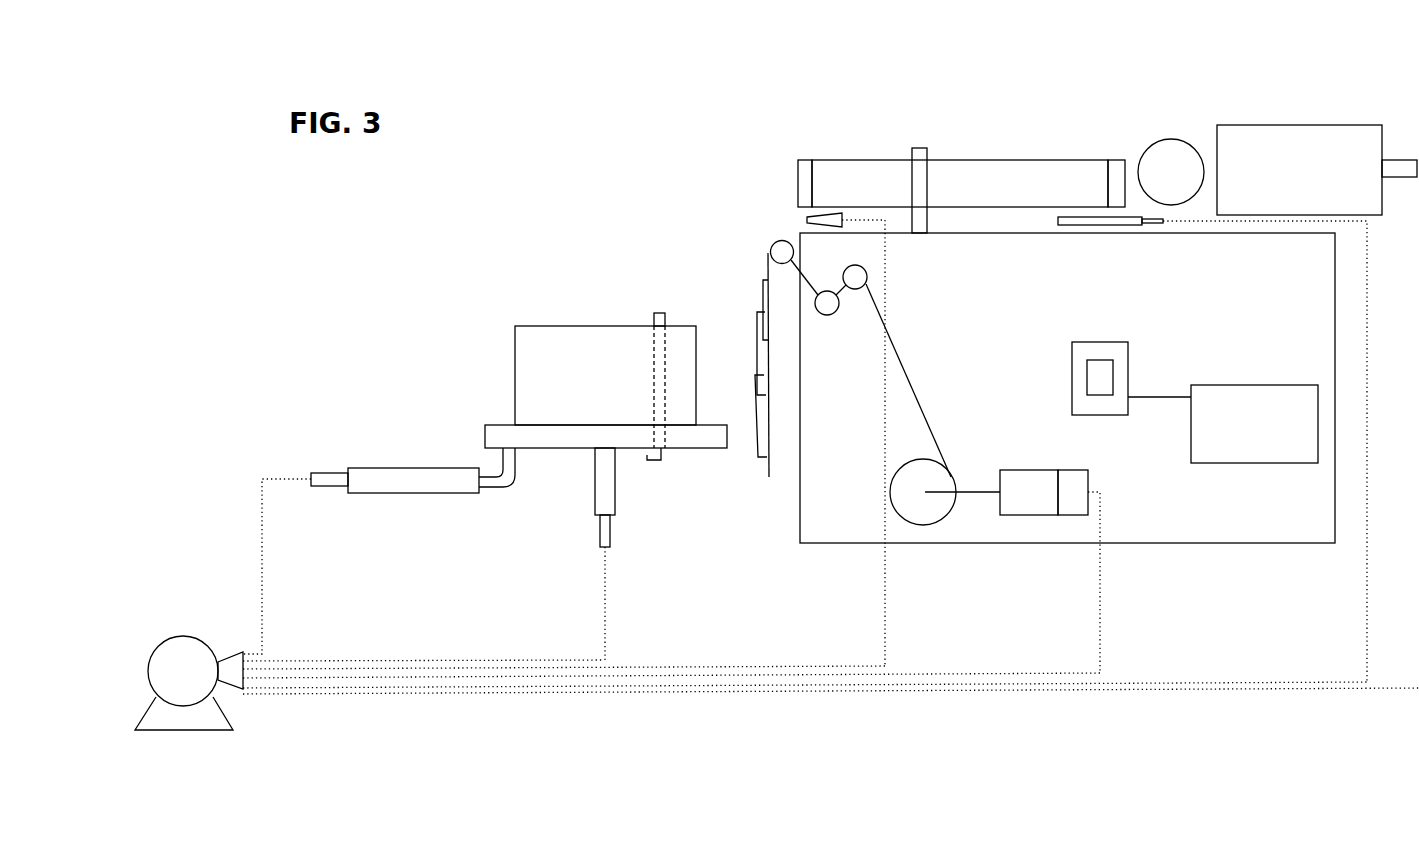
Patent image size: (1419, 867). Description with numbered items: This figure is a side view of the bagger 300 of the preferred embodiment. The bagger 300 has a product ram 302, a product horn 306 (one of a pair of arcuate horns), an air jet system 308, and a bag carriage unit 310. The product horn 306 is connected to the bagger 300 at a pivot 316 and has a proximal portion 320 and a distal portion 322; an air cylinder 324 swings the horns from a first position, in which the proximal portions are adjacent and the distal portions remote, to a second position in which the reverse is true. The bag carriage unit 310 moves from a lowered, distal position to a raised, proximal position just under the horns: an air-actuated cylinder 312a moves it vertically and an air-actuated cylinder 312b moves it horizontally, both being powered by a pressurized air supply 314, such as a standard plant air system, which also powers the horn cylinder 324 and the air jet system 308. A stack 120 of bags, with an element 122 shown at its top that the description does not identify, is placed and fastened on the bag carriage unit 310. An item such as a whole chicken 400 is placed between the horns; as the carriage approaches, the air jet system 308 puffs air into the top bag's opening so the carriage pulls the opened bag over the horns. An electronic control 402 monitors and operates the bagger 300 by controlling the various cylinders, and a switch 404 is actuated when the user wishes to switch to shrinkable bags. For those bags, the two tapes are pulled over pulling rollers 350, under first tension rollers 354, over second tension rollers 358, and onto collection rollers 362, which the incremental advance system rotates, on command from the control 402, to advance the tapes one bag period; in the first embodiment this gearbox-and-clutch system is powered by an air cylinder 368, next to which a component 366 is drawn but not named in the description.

The bagger 300 is at (922, 46).
The product ram 302 is at (1367, 133).
The product horn 306 is at (1080, 168).
The air jet system 308 is at (805, 220).
The bag carriage unit 310 is at (493, 435).
The air-actuated cylinder 312a is at (608, 483).
The air-actuated cylinder 312b is at (415, 478).
The pressurized air supply 314 is at (168, 653).
The pivot 316 is at (916, 150).
The proximal portion 320 is at (1118, 162).
The distal portion 322 is at (806, 168).
The air cylinder 324 is at (1103, 215).
The pulling rollers 350 is at (780, 250).
The first tension rollers 354 is at (828, 303).
The second tension rollers 358 is at (857, 273).
The collection rollers 362 is at (918, 472).
The motor 366 is at (1047, 477).
The air cylinder 368 is at (1078, 477).
The whole chicken 400 is at (1185, 148).
The electronic control 402 is at (1254, 424).
The switch 404 is at (1102, 347).
The stack of bags 120 is at (567, 342).
The probe 122 is at (663, 313).